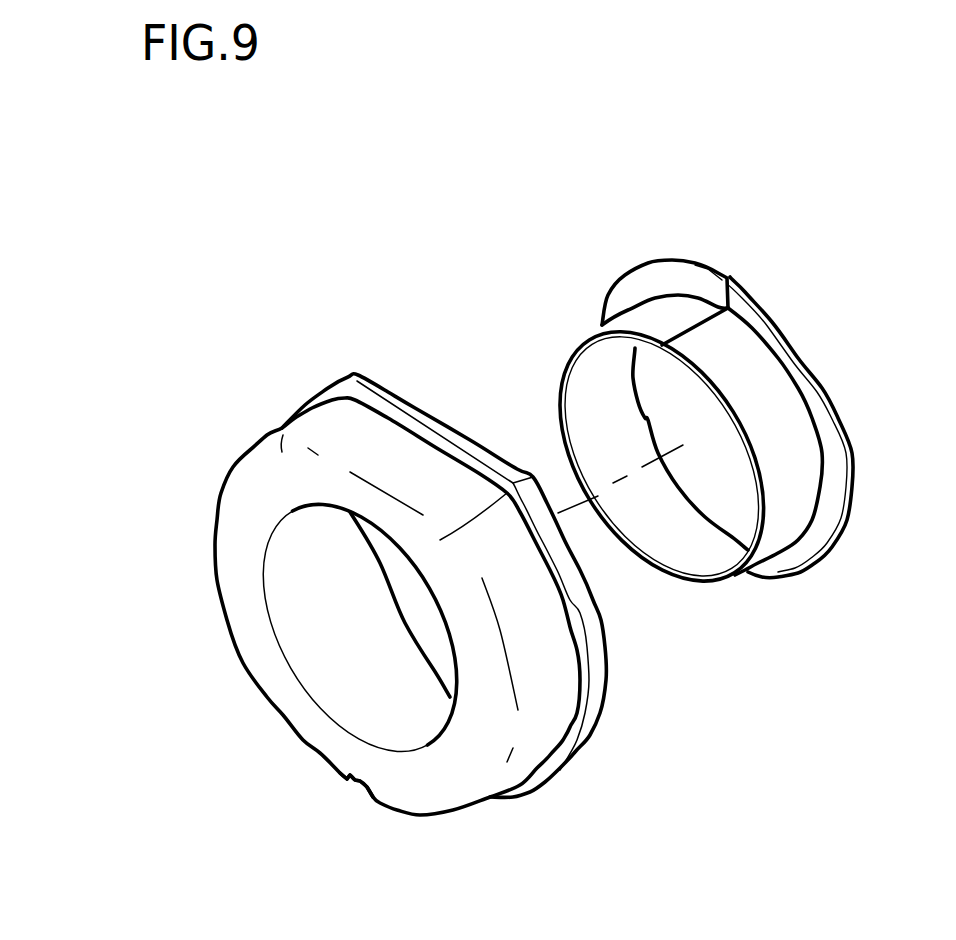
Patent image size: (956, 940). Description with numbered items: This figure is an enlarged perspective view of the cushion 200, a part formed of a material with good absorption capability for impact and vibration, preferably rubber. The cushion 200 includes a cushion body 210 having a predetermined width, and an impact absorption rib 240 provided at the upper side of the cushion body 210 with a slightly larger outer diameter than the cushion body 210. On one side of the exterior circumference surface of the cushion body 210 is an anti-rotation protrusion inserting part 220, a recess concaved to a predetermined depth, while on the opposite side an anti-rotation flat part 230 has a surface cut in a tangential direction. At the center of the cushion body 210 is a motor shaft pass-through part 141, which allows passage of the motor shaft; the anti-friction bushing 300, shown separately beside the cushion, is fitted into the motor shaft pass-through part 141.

The cushion 200 is at (435, 532).
The cushion body 210 is at (538, 725).
The anti-rotation protrusion inserting part 220 is at (362, 785).
The anti-rotation flat part 230 is at (403, 465).
The impact absorption rib 240 is at (603, 660).
The motor shaft pass-through part 141 is at (342, 615).
The anti-friction bushing 300 is at (782, 523).